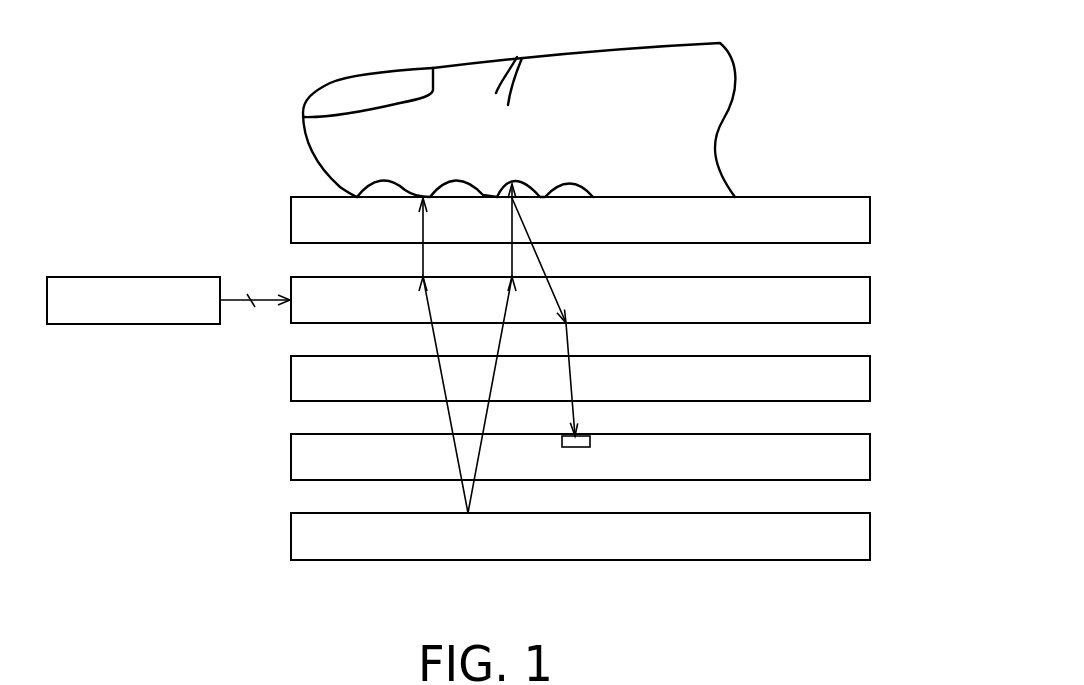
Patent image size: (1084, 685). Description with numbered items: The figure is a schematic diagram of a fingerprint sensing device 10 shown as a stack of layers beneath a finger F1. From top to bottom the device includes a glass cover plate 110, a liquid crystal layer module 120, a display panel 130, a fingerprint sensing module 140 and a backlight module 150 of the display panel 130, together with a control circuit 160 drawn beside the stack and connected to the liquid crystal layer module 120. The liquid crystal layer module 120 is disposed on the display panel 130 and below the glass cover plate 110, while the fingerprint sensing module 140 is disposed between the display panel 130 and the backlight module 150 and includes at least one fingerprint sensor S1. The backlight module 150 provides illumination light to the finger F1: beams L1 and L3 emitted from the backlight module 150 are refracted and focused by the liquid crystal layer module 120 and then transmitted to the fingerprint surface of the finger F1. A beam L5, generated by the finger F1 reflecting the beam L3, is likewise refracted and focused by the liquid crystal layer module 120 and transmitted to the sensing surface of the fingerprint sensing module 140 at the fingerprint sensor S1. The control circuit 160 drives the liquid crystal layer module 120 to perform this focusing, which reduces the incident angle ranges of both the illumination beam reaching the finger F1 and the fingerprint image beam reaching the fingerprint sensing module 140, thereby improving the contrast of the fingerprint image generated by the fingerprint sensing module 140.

The fingerprint sensing device 10 is at (622, 408).
The glass cover plate 110 is at (870, 221).
The liquid crystal layer module 120 is at (870, 301).
The display panel 130 is at (870, 380).
The fingerprint sensing module 140 is at (870, 460).
The backlight module 150 is at (870, 538).
The control circuit 160 is at (150, 277).
The finger F1 is at (692, 43).
The beam L1 is at (447, 415).
The beam L3 is at (480, 452).
The beam L5 is at (542, 262).
The fingerprint sensor S1 is at (573, 447).